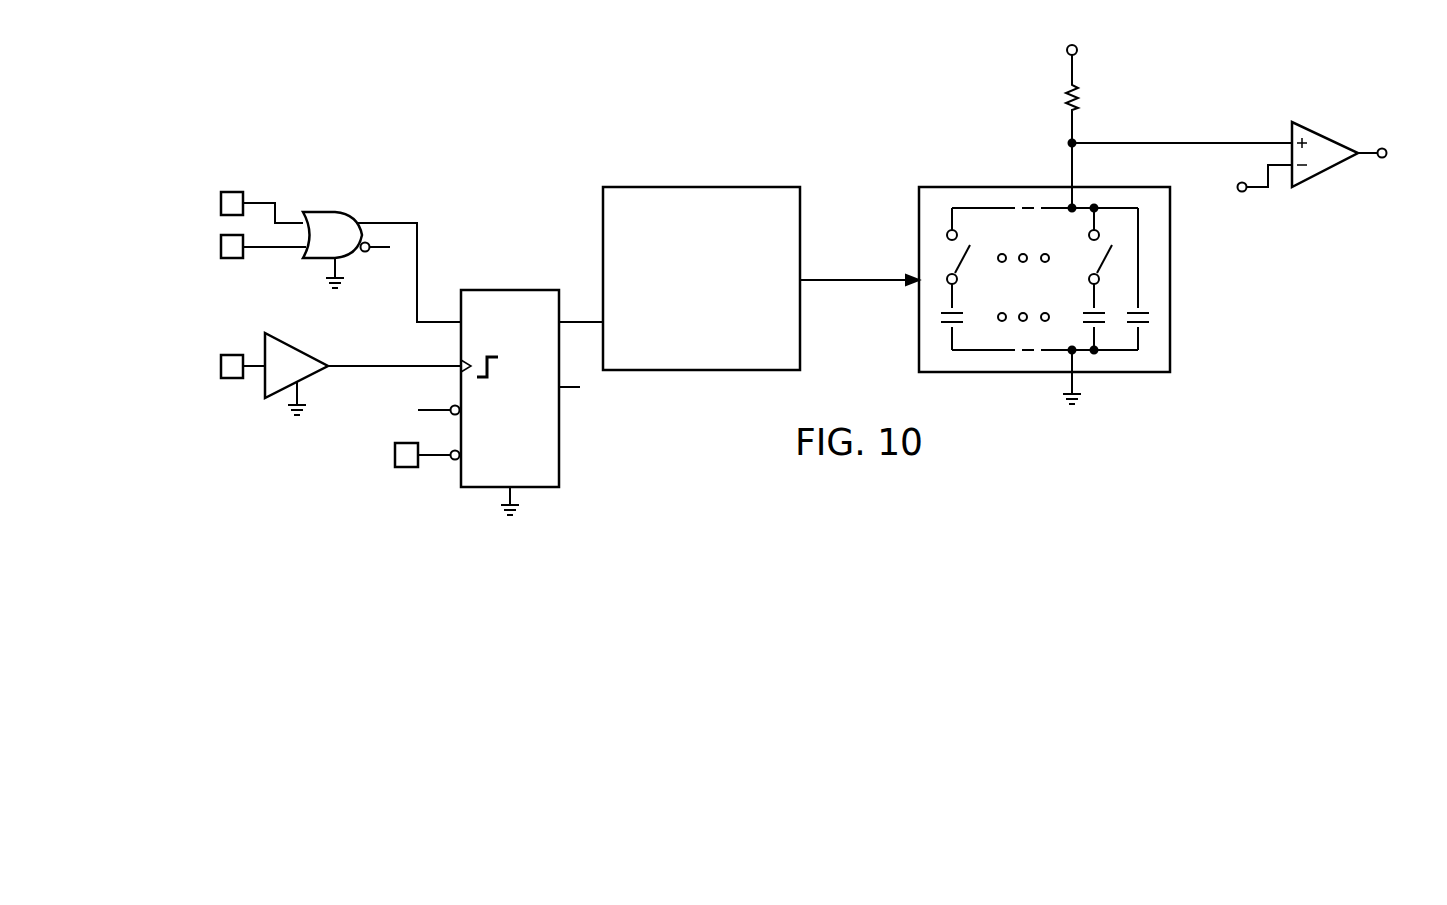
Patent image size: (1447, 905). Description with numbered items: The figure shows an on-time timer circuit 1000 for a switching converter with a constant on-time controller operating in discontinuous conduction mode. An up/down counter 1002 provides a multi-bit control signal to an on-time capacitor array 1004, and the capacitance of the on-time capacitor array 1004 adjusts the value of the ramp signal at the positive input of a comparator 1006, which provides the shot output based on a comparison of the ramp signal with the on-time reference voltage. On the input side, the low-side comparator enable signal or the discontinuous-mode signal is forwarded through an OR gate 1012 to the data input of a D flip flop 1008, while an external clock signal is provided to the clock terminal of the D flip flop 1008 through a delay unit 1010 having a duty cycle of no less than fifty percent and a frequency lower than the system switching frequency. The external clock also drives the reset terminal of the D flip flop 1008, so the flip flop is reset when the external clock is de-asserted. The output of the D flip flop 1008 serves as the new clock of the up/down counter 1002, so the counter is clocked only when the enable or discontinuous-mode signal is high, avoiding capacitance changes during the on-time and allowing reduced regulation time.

The on-time timer circuit 1000 is at (532, 86).
The up/down counter 1002 is at (700, 187).
The on-time capacitor array 1004 is at (1170, 282).
The comparator 1006 is at (1343, 120).
The D flip flop 1008 is at (498, 290).
The delay unit 1010 is at (323, 331).
The OR gate 1012 is at (345, 212).